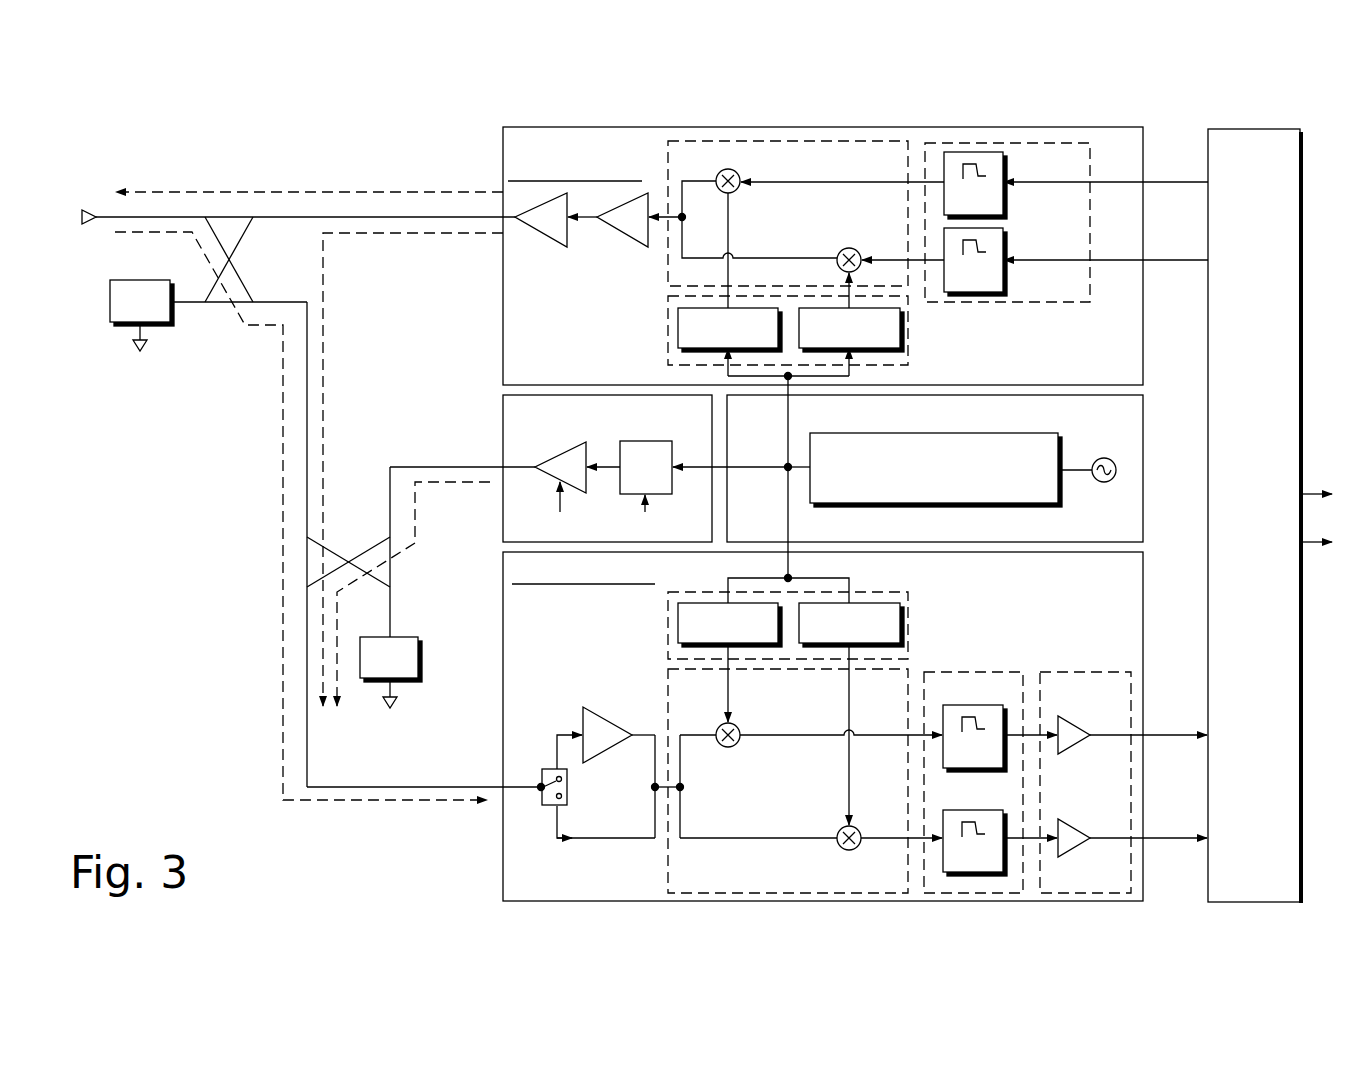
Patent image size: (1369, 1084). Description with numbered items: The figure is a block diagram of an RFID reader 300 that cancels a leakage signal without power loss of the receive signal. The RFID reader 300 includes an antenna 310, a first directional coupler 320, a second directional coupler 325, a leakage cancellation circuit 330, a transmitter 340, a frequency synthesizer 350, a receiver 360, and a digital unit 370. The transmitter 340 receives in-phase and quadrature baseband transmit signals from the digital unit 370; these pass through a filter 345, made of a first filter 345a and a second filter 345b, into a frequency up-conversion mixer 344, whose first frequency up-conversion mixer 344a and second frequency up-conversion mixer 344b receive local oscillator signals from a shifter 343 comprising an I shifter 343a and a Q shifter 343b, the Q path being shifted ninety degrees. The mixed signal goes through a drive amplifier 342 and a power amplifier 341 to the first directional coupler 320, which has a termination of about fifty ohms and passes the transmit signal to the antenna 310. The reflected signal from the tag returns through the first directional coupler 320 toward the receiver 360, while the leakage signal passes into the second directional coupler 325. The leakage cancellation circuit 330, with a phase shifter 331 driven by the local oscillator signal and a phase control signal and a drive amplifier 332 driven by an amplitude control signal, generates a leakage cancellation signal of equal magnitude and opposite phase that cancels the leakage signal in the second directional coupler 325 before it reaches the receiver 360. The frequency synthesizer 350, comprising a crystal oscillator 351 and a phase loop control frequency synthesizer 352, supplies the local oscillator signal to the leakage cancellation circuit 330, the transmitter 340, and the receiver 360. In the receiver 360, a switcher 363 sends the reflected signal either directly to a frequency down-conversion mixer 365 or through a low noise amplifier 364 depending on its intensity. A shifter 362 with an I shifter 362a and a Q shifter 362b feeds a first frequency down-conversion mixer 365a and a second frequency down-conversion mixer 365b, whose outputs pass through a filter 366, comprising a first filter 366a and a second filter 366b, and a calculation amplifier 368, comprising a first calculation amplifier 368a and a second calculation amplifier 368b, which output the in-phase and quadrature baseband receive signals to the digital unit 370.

The RFID reader 300 is at (442, 106).
The antenna 310 is at (90, 210).
The first directional coupler 320 is at (231, 213).
The second directional coupler 325 is at (305, 558).
The leakage cancellation circuit 330 is at (542, 427).
The phase shifter 331 is at (645, 441).
The drive amplifier 332 is at (565, 445).
The transmitter 340 is at (823, 256).
The power amplifier 341 is at (545, 240).
The drive amplifier 342 is at (618, 240).
The shifter 343 is at (908, 363).
The I shifter 343a is at (678, 325).
The Q shifter 343b is at (900, 332).
The frequency up-conversion mixer 344 is at (866, 141).
The first frequency up-conversion mixer 344a is at (737, 172).
The second frequency up-conversion mixer 344b is at (840, 252).
The filter 345 is at (1048, 143).
The first filter 345a is at (1003, 200).
The second filter 345b is at (1003, 277).
The frequency synthesizer 350 is at (769, 427).
The crystal oscillator 351 is at (1100, 458).
The phase loop control frequency synthesizer 352 is at (1005, 433).
The receiver 360 is at (823, 726).
The shifter 362 is at (888, 592).
The I shifter 362a is at (678, 620).
The Q shifter 362b is at (900, 630).
The switcher 363 is at (545, 769).
The low noise amplifier 364 is at (612, 750).
The frequency down-conversion mixer 365 is at (668, 690).
The first frequency down-conversion mixer 365a is at (741, 727).
The second frequency down-conversion mixer 365b is at (837, 832).
The filter 366 is at (1003, 672).
The first filter 366a is at (952, 705).
The second filter 366b is at (952, 810).
The calculation amplifier 368 is at (1090, 672).
The first calculation amplifier 368a is at (1088, 716).
The second calculation amplifier 368b is at (1088, 818).
The digital unit 370 is at (1270, 129).